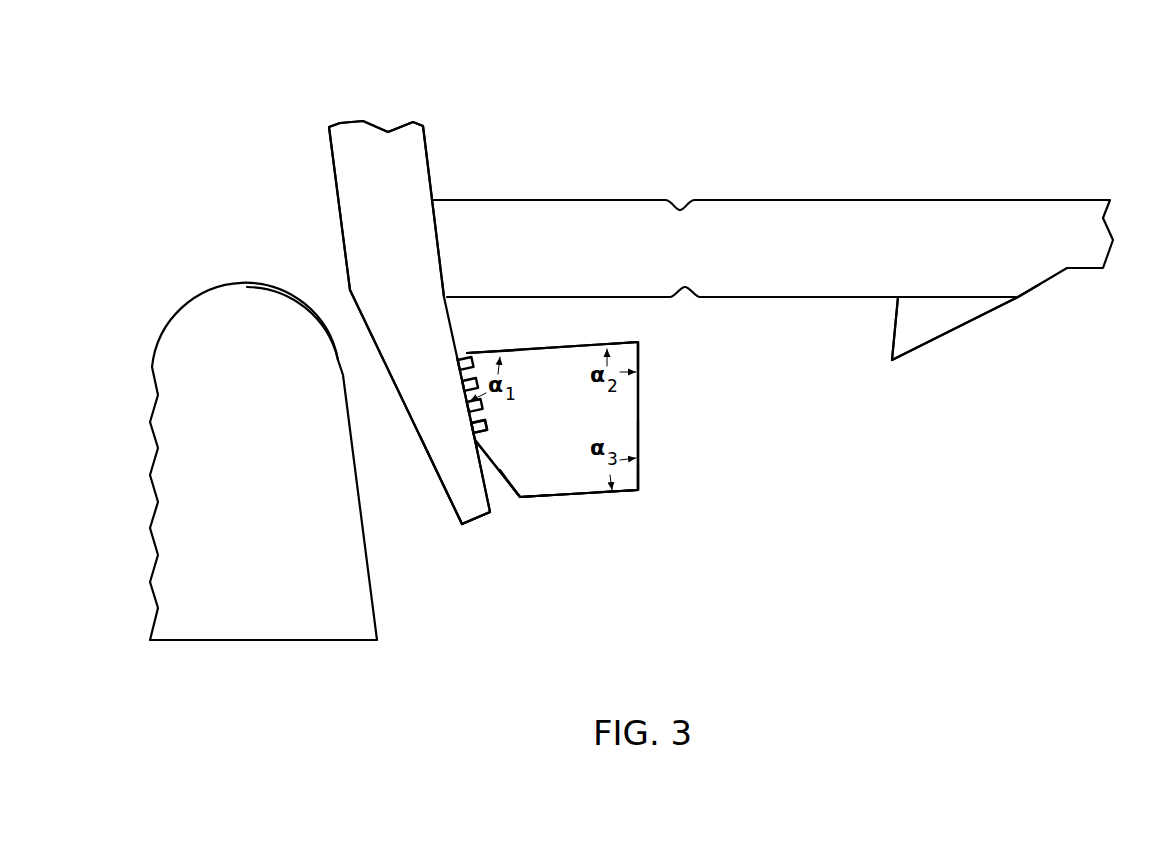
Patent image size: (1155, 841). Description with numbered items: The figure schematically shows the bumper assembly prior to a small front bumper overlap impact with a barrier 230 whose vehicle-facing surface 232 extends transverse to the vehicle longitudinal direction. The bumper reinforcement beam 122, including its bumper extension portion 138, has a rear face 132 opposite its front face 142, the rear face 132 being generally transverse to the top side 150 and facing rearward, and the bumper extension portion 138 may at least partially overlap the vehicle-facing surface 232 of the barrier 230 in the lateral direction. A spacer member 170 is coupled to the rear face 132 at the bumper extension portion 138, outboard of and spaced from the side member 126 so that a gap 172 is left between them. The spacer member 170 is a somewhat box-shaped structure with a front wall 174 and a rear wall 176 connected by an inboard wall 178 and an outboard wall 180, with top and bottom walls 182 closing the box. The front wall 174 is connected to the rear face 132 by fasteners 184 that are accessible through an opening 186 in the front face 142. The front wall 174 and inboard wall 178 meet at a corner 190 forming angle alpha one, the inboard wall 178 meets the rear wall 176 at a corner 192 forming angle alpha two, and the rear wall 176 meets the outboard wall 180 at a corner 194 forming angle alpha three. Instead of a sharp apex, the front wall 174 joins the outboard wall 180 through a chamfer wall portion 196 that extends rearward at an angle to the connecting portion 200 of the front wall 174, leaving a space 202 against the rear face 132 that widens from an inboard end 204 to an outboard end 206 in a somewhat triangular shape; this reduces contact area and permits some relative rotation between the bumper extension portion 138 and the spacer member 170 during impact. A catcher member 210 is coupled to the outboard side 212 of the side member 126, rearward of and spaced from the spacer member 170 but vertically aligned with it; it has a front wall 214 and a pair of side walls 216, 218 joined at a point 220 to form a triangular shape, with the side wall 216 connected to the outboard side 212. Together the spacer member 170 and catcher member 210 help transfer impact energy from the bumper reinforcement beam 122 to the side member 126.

The bumper reinforcement beam 122 is at (457, 110).
The side member 126 is at (817, 178).
The rear face 132 is at (432, 175).
The bumper extension portion 138 is at (443, 517).
The front face 142 is at (333, 170).
The top side 150 is at (361, 147).
The spacer member 170 is at (662, 490).
The gap 172 is at (528, 318).
The front wall 174 is at (488, 427).
The rear wall 176 is at (639, 450).
The inboard wall 178 is at (578, 347).
The outboard wall 180 is at (590, 497).
The top and bottom walls 182 is at (620, 416).
The fasteners 184 is at (478, 340).
The opening 186 is at (394, 418).
The corner 190 is at (457, 360).
The corner 192 is at (639, 343).
The corner 194 is at (639, 491).
The chamfer wall portion 196 is at (508, 498).
The connecting portion 200 is at (474, 433).
The space 202 is at (483, 502).
The inboard end 204 is at (478, 441).
The outboard end 206 is at (522, 498).
The catcher member 210 is at (970, 362).
The outboard side 212 is at (802, 297).
The front wall 214 is at (890, 330).
The side wall 216 is at (950, 297).
The side wall 218 is at (936, 340).
The point 220 is at (1018, 298).
The barrier 230 is at (142, 302).
The vehicle-facing surface 232 is at (342, 375).